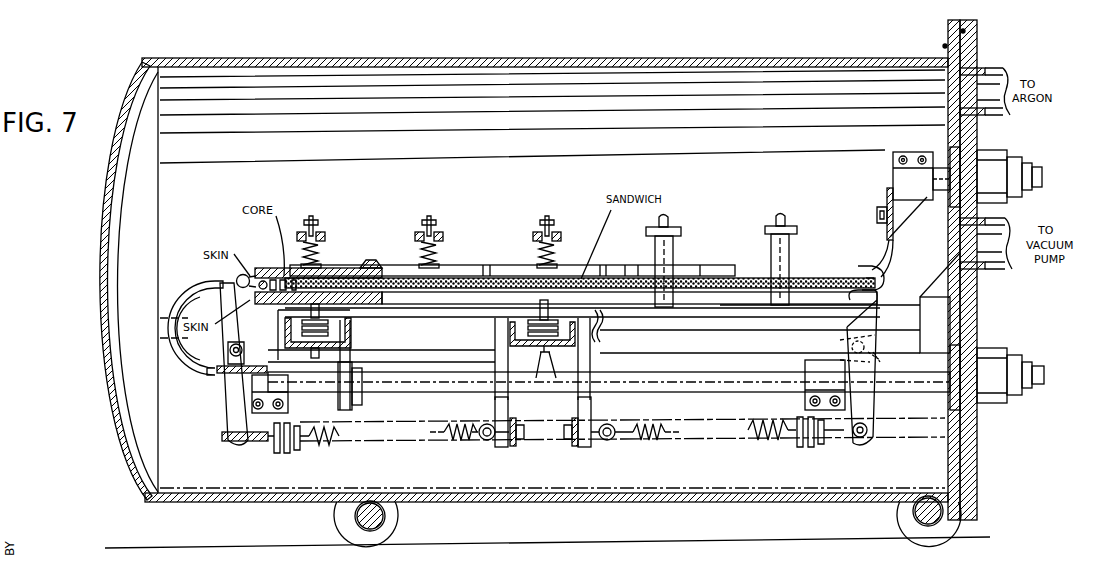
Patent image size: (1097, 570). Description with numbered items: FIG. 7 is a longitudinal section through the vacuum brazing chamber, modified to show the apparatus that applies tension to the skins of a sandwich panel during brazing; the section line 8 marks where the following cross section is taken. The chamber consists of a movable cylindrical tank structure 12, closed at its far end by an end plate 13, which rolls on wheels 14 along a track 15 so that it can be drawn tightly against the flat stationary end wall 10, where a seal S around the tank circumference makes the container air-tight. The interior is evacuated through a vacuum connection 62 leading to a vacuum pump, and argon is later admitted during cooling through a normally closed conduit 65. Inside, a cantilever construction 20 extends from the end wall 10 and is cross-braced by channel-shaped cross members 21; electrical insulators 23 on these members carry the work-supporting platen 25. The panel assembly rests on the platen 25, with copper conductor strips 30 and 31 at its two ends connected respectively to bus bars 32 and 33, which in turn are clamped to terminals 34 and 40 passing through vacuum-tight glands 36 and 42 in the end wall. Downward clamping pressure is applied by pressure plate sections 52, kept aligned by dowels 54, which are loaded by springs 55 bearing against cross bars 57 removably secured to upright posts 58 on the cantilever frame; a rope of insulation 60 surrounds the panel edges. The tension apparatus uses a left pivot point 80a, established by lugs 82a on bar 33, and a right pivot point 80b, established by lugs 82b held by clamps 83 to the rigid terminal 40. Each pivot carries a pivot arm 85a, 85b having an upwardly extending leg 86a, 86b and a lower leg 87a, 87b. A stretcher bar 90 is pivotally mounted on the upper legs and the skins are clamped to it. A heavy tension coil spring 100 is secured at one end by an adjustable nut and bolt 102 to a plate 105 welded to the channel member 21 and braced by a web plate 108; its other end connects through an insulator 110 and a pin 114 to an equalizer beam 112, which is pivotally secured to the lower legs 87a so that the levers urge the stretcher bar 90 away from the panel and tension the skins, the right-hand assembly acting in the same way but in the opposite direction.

The section line 8— 8 is at (232, 246).
The end wall 10 is at (978, 143).
The tank structure 12 is at (667, 57).
The end plate 13 is at (108, 361).
The wheels 14 is at (338, 522).
The track 15 is at (156, 547).
The cantilever construction 20 is at (938, 318).
The cross members 21 is at (510, 332).
The electrical insulators 23 is at (330, 333).
The platen 25 is at (415, 297).
The conductor strips 30 is at (874, 264).
The conductor strips 31 is at (191, 284).
The bus bar 32 is at (889, 202).
The bus bar 33 is at (222, 373).
The terminal 34 is at (940, 163).
The vacuum-tight gland 36 is at (1003, 159).
The terminal 40 is at (433, 389).
The vacuum-tight gland 42 is at (998, 401).
The pressure plate sections 52 is at (463, 266).
The dowels 54 is at (372, 270).
The springs 55 is at (324, 246).
The cross bars 57 is at (322, 229).
The upright posts 58 is at (674, 251).
The rope of insulation 60 is at (262, 282).
The vacuum connection 62 is at (1001, 268).
The conduit 65 is at (988, 73).
The pivot point 80a is at (228, 364).
The pivot point 80b is at (855, 333).
The lugs 82a is at (227, 353).
The lugs 82b is at (955, 381).
The clamps 83 is at (812, 381).
The pivot arm 85a is at (210, 340).
The pivot arm 85b is at (878, 405).
The upwardly extending leg 86a is at (225, 303).
The upwardly extending leg 86b is at (875, 292).
The lower leg 87a is at (226, 419).
The lower leg 87b is at (875, 419).
The stretcher bar 90 is at (222, 281).
The tension coil spring 100 is at (340, 440).
The adjustable nut and bolt 102 is at (487, 441).
The plate 105 is at (520, 449).
The web plate 108 is at (539, 358).
The insulator 110 is at (300, 448).
The equalizer beam 112 is at (242, 451).
The pin 114 is at (276, 444).
The seal S is at (965, 30).
The core C is at (290, 278).